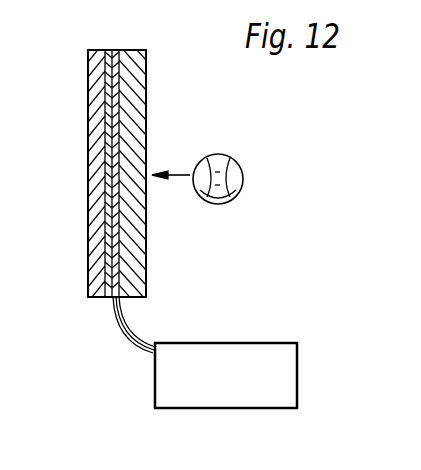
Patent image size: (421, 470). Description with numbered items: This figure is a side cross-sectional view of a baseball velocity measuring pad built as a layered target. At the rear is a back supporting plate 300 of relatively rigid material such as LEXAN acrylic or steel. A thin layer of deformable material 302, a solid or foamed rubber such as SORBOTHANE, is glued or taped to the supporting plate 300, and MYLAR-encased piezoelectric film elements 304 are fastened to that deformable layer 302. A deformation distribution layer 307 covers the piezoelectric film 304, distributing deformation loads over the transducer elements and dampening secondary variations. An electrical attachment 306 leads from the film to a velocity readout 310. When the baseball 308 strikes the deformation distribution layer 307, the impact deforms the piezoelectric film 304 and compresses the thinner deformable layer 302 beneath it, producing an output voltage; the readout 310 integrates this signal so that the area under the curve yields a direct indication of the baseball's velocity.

The back supporting plate 300 is at (92, 165).
The thin layer of deformable material 302 is at (111, 50).
The piezoelectric film elements 304 is at (120, 51).
The electrical attachment 306 is at (115, 312).
The deformation distribution layer 307 is at (141, 62).
The baseball 308 is at (219, 155).
The velocity readout 310 is at (226, 375).